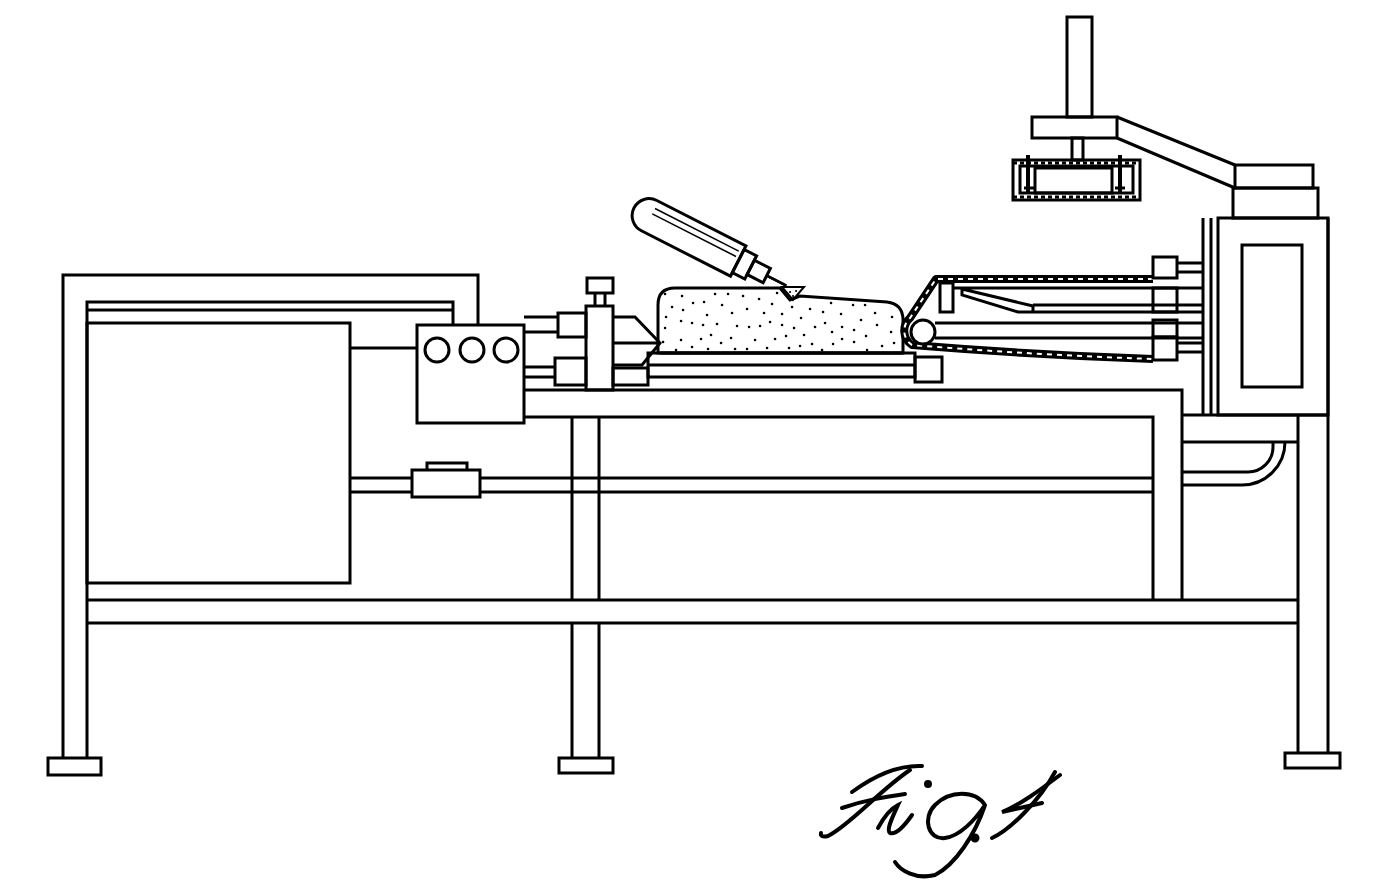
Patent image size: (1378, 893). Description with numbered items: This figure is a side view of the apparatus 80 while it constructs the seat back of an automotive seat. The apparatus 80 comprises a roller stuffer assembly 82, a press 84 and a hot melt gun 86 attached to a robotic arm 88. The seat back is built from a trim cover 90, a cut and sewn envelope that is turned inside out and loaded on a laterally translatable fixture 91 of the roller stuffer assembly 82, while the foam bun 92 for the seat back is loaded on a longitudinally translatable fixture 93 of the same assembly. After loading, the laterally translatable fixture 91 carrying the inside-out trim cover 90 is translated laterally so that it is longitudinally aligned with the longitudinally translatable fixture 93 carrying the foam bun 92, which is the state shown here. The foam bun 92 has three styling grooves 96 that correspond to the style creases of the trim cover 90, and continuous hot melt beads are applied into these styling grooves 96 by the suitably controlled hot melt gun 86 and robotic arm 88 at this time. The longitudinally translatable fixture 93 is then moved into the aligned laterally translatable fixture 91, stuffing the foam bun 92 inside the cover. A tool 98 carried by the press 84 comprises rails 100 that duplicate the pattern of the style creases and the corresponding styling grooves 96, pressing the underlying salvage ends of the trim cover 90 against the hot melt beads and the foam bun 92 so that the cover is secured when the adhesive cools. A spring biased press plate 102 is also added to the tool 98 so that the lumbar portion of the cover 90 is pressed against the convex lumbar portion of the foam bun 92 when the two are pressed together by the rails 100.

The apparatus 80 is at (468, 273).
The roller stuffer assembly 82 is at (834, 286).
The press 84 is at (1062, 114).
The hot melt gun 86 is at (773, 282).
The robotic arm 88 is at (705, 237).
The trim cover 90 is at (1003, 275).
The laterally translatable fixture 91 is at (1065, 330).
The foam bun 92 is at (867, 343).
The longitudinally translatable fixture 93 is at (628, 325).
The styling grooves 96 is at (788, 300).
The tool 98 is at (1013, 172).
The rails 100 is at (1130, 178).
The spring biased press plate 102 is at (1048, 200).